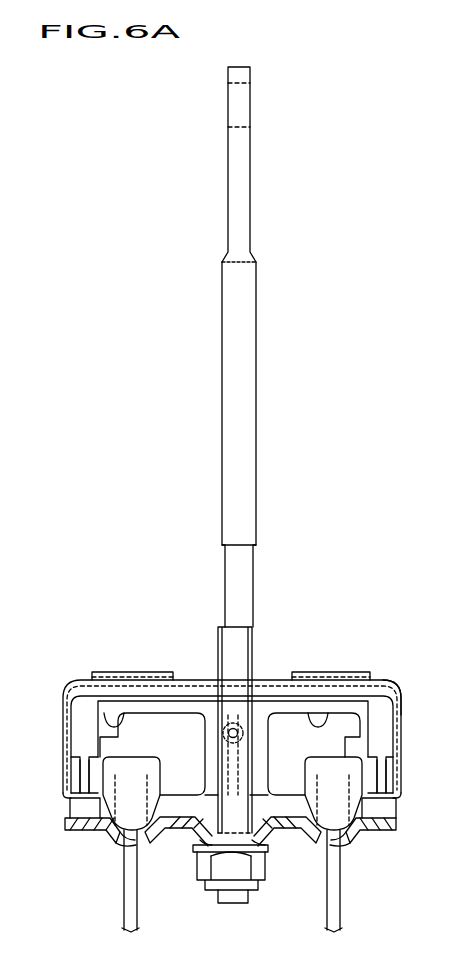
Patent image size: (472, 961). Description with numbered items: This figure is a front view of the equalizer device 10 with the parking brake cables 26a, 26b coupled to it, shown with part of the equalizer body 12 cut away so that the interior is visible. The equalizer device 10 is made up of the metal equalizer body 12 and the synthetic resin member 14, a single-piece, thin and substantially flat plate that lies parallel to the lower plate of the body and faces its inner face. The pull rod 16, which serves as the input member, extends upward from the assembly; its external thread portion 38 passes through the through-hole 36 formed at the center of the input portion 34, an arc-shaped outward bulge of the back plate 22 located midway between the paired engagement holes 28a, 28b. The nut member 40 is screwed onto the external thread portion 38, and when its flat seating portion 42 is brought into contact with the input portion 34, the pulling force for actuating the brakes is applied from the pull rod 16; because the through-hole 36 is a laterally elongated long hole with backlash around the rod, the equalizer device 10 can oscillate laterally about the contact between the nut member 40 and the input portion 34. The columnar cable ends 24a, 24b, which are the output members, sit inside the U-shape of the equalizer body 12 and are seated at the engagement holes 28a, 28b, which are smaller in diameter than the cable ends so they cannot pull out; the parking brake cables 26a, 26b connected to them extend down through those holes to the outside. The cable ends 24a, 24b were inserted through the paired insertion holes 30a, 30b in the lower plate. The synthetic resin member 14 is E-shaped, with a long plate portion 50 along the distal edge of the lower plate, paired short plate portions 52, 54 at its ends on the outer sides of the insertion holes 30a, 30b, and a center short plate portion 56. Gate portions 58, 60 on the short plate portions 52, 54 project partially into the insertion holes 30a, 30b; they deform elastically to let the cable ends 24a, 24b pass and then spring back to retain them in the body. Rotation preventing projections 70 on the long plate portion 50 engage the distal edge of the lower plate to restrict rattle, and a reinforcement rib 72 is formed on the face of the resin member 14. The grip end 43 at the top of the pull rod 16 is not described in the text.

The equalizer device 10 is at (386, 586).
The equalizer body 12 is at (409, 838).
The synthetic resin member 14 is at (64, 663).
The pull rod 16 is at (240, 340).
The back plate 22 is at (85, 833).
The cable end 24a is at (120, 800).
The cable end 24b is at (340, 795).
The parking brake cable 26a is at (125, 901).
The parking brake cable 26b is at (340, 903).
The engagement hole 28a is at (118, 840).
The engagement hole 28b is at (347, 838).
The insertion hole 30a is at (117, 724).
The insertion hole 30b is at (318, 724).
The input portion 34 is at (192, 838).
The through-hole 36 is at (262, 858).
The external thread portion 38 is at (228, 668).
The nut member 40 is at (233, 870).
The flat seating portion 42 is at (208, 862).
The grip portion 43 is at (240, 111).
The long plate portion 50 is at (271, 690).
The short plate portion 52 is at (88, 773).
The short plate portion 54 is at (388, 776).
The center short plate portion 56 is at (206, 740).
The gate portion 58 is at (100, 748).
The gate portion 60 is at (350, 750).
The rotation preventing projection 70 is at (148, 672).
The reinforcement rib 72 is at (384, 690).